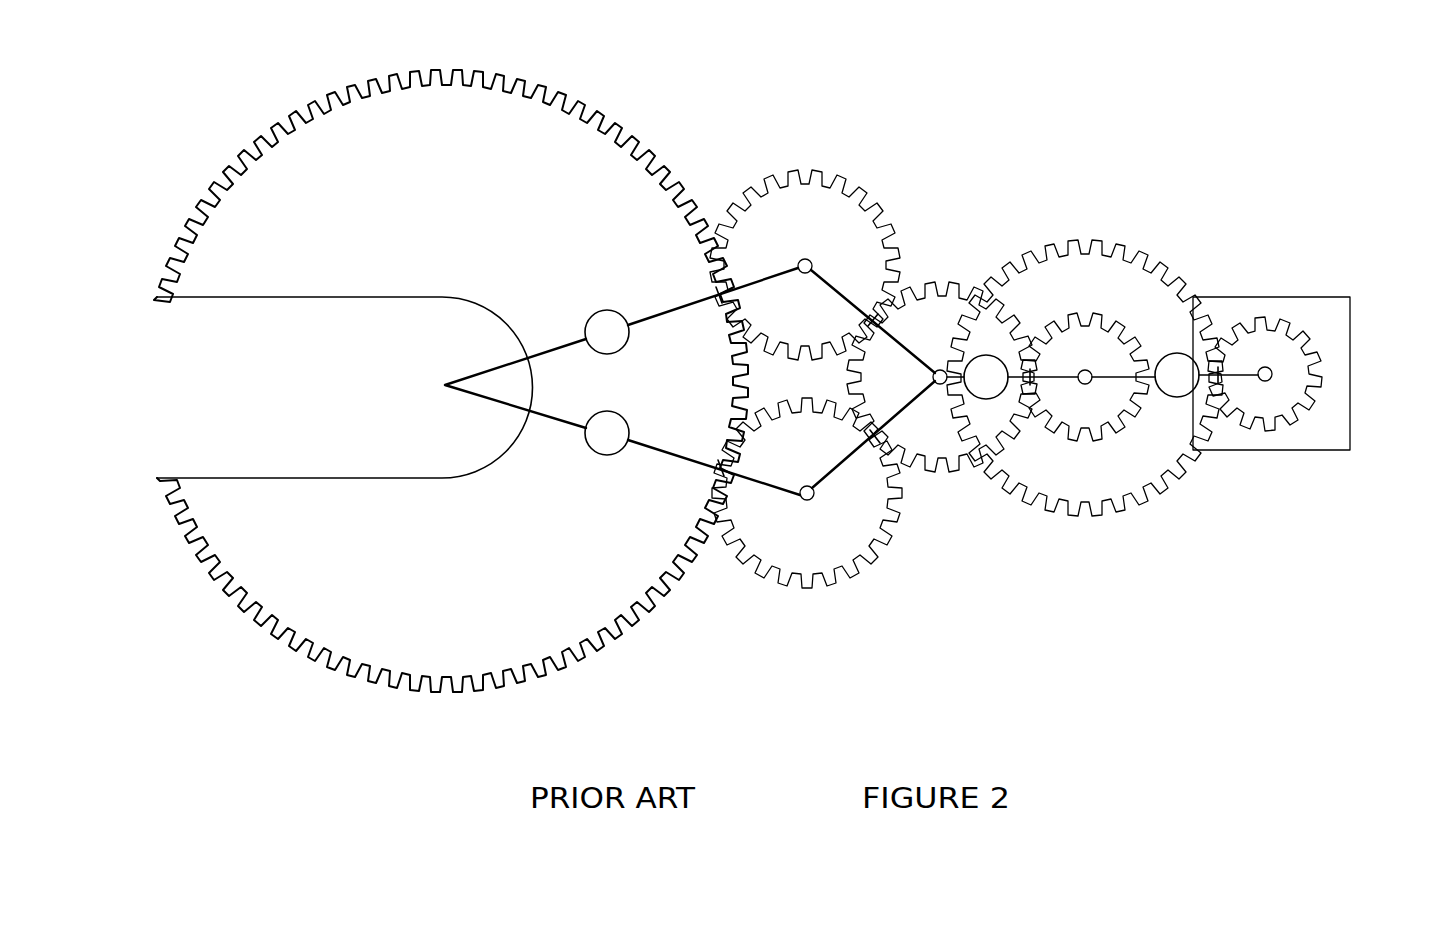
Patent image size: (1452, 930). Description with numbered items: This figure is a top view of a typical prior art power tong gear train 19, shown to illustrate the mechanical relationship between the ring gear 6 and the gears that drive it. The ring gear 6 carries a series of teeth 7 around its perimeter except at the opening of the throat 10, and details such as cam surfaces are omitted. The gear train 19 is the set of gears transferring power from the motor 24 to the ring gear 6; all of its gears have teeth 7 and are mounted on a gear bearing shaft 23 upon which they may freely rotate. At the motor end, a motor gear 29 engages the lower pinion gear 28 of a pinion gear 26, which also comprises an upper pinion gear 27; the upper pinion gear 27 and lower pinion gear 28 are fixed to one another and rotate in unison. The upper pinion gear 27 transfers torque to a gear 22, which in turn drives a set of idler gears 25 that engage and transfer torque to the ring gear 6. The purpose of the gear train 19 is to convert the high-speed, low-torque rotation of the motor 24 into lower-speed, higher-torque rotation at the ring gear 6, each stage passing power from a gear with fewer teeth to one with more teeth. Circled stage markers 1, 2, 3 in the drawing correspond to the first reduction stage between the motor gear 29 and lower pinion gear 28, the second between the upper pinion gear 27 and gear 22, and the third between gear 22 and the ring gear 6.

The ring gear 6 is at (299, 247).
The throat 10 is at (212, 412).
The teeth 7 is at (576, 106).
The idler gears 25 is at (817, 203).
The gear bearing shaft 23 is at (812, 266).
The gear 22 is at (957, 432).
The lower pinion gear 28 is at (1110, 278).
The upper pinion gear 27 is at (1085, 405).
The motor gear 29 is at (1280, 337).
The motor 24 is at (1333, 378).
The power tong gear train 19 is at (1003, 190).
The pinion gear 26 is at (1207, 501).
The first stage 1 is at (1175, 375).
The second stage 2 is at (1012, 377).
The third stage 3 is at (607, 382).